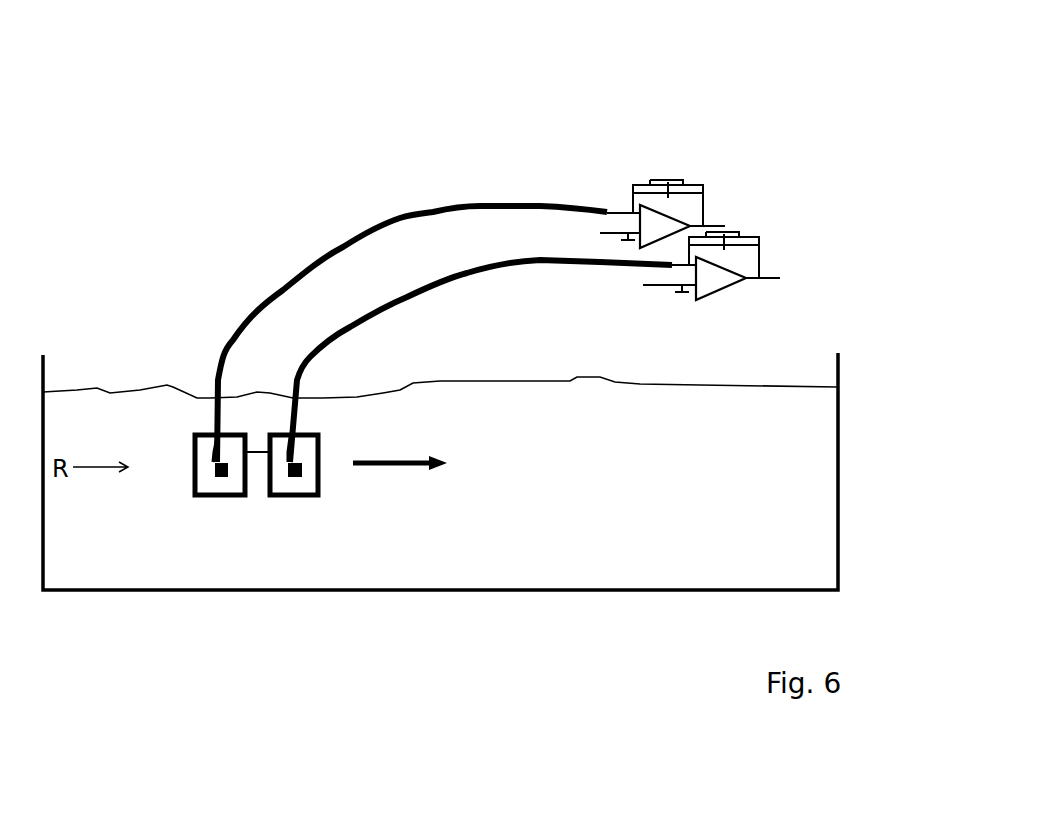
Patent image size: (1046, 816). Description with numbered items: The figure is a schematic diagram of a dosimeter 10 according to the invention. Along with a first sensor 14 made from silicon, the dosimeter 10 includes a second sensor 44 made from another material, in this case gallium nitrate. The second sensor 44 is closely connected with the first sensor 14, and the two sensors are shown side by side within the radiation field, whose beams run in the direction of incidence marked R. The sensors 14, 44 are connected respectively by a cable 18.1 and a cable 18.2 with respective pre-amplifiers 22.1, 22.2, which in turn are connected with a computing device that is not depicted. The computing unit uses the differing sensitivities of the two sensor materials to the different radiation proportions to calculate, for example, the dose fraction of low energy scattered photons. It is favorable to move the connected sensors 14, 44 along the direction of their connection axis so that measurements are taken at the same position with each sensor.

The dosimeter 10 is at (678, 113).
The first sensor 14 is at (215, 478).
The second sensor 44 is at (297, 477).
The cable 18.1 is at (450, 205).
The cable 18.2 is at (475, 273).
The pre-amplifier 22.1 is at (647, 185).
The pre-amplifier 22.2 is at (733, 258).